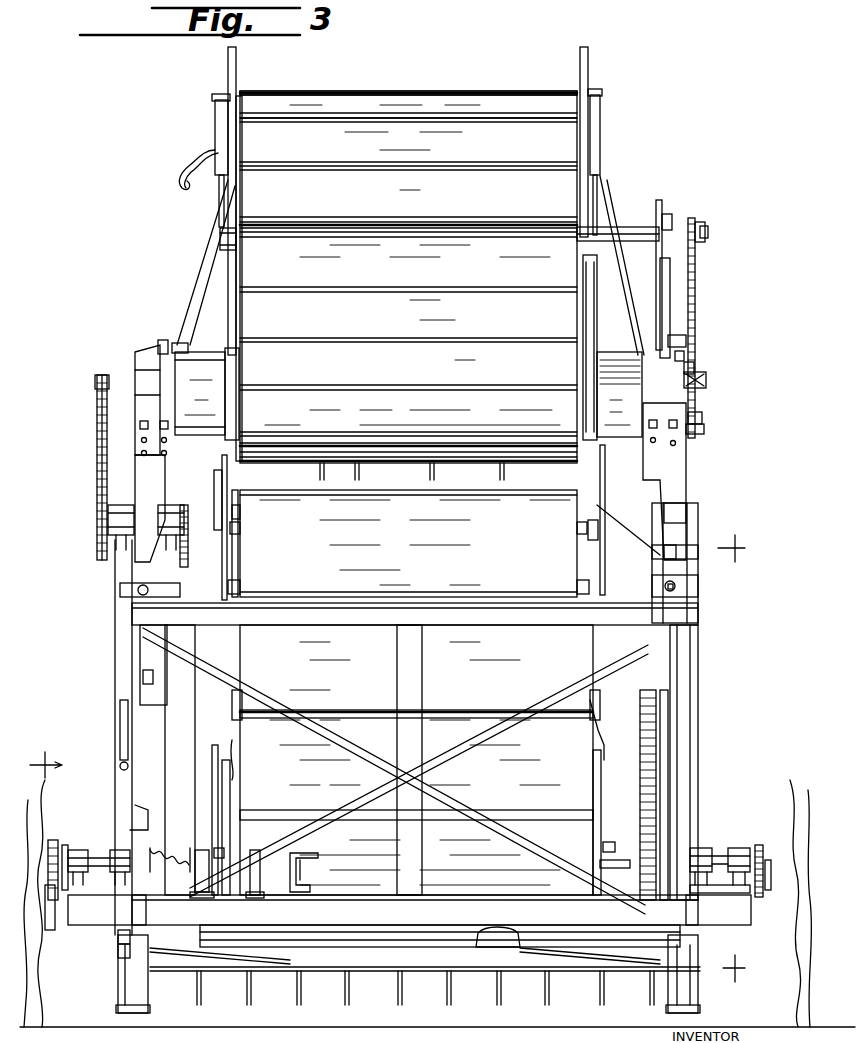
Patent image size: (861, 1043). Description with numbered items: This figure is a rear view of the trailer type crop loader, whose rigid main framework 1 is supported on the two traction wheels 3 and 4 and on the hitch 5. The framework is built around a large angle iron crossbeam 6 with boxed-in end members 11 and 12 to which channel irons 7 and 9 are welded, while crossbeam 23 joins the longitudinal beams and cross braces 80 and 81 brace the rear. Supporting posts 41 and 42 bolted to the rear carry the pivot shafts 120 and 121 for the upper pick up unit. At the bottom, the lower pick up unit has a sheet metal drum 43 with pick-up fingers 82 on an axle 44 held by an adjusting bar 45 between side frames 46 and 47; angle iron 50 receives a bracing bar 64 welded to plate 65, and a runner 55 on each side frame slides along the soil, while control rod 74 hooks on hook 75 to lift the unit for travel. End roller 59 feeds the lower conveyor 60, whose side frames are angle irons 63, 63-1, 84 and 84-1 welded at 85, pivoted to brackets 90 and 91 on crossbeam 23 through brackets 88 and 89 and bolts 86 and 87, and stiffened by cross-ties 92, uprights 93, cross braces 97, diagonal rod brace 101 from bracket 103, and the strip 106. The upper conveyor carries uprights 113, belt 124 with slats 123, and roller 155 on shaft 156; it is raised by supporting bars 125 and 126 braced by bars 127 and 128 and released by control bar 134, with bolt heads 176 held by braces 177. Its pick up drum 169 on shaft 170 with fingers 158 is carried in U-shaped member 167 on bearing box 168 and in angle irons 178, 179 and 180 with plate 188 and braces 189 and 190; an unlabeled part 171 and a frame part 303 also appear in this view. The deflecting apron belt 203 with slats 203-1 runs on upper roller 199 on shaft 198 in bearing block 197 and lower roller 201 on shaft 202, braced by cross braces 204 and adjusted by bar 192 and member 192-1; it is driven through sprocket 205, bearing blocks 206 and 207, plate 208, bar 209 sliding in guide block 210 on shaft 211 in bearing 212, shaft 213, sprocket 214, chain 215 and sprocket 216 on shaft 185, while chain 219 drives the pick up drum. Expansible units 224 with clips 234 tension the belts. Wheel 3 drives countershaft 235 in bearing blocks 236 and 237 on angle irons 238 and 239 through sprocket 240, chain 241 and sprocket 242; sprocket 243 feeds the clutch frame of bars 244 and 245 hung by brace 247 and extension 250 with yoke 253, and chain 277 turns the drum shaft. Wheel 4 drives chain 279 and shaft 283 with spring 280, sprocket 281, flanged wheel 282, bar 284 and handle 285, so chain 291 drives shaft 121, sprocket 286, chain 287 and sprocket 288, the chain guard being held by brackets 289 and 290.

The main framework 1 is at (104, 775).
The wheel 3 is at (780, 1020).
The wheel 4 is at (50, 994).
The hitch 5 is at (742, 758).
The angle iron crossbeam 6 is at (458, 906).
The channel iron 7 is at (682, 726).
The channel iron 9 is at (130, 813).
The end member 11 is at (704, 946).
The end member 12 is at (80, 932).
The crossbeam 23 is at (496, 626).
The supporting post 41 is at (698, 647).
The supporting post 42 is at (146, 654).
The hollow sheet metal drum 43 is at (175, 976).
The axle 44 is at (118, 953).
The adjusting bar 45 is at (118, 938).
The crop pick up side frame 46 is at (715, 996).
The crop pick up side frame 47 is at (111, 997).
The angle iron 50 is at (118, 967).
The runner 55 is at (150, 1012).
The end roller 59 is at (496, 948).
The lower conveyor 60 is at (402, 506).
The angle iron 63 is at (587, 548).
The angle iron 63-1 is at (565, 529).
The bracing bar 64 is at (220, 968).
The plate 65 is at (232, 939).
The control rod 74 is at (122, 736).
The hook 75 is at (124, 1006).
The cross brace 80 is at (270, 697).
The cross brace 81 is at (570, 690).
The pick-up fingers 82 is at (450, 1004).
The angle iron 84 is at (238, 546).
The angle iron 84-1 is at (248, 521).
The weld joint 85 is at (246, 531).
The bolt 86 is at (586, 589).
The bolt 87 is at (242, 590).
The bracket 88 is at (598, 576).
The bracket 89 is at (245, 579).
The bracket 90 is at (598, 589).
The bracket 91 is at (234, 590).
The cross-tie 92 is at (597, 826).
The upright 93 is at (600, 770).
The cross brace 97 is at (436, 702).
The diagonal rod brace 101 is at (597, 842).
The bracket 103 is at (598, 869).
The thin metal strip 106 is at (396, 686).
The upright 113 is at (590, 74).
The pivot shaft 120 is at (686, 517).
The pivot shaft 121 is at (100, 523).
The slats 123 is at (526, 120).
The upper conveyor belt 124 is at (408, 104).
The supporting bar 125 is at (612, 222).
The supporting bar 126 is at (188, 300).
The bracing bar 127 is at (614, 522).
The bracing bar 128 is at (213, 496).
The control bar 134 is at (188, 163).
The roller 155 is at (238, 96).
The shaft 156 is at (600, 96).
The pick up fingers 158 is at (276, 478).
The U-shaped frame member 167 is at (690, 486).
The bearing box 168 is at (135, 556).
The pick up drum 169 is at (210, 450).
The shaft 170 is at (598, 449).
The shaft 171 is at (702, 392).
The head 176 is at (680, 584).
The brace 177 is at (680, 590).
The angle iron 178 is at (135, 354).
The angle iron 179 is at (152, 345).
The angle iron 180 is at (160, 410).
The shaft 185 is at (706, 379).
The plate 188 is at (222, 348).
The angle iron brace 189 is at (180, 345).
The angle iron brace 190 is at (180, 366).
The adjustable supporting bar 192 is at (202, 318).
The extension member 192-1 is at (218, 274).
The bearing block 197 is at (220, 241).
The upper roller shaft 198 is at (708, 232).
The upper roller 199 is at (578, 230).
The lower roller 201 is at (572, 480).
The shaft 202 is at (222, 464).
The deflecting apron belt 203 is at (408, 277).
The slats 203-1 is at (345, 294).
The cross braces 204 is at (244, 280).
The sprocket 205 is at (705, 224).
The bearing block 206 is at (598, 252).
The bearing block 207 is at (672, 222).
The plate 208 is at (664, 204).
The long bar 209 is at (670, 318).
The guide block 210 is at (686, 340).
The shaft 211 is at (625, 325).
The bearing member 212 is at (664, 317).
The shaft 213 is at (702, 416).
The sprocket 214 is at (704, 430).
The sprocket chain 215 is at (698, 262).
The sprocket 216 is at (694, 368).
The sprocket chain 219 is at (684, 357).
The expansible unit 224 is at (250, 564).
The clips 234 is at (245, 673).
The countershaft 235 is at (720, 848).
The bearing block 236 is at (750, 840).
The bearing block 237 is at (694, 846).
The angle iron 238 is at (736, 886).
The angle iron 239 is at (740, 870).
The sprocket 240 is at (750, 852).
The roller chain 241 is at (770, 942).
The large sprocket 242 is at (772, 966).
The sprocket 243 is at (648, 896).
The bar member 244 is at (668, 783).
The bar member 245 is at (658, 762).
The bracing member 247 is at (628, 687).
The brace extension 250 is at (655, 801).
The yoke member 253 is at (652, 850).
The roller chain 277 is at (160, 876).
The roller chain 279 is at (57, 856).
The spring 280 is at (150, 852).
The sprocket 281 is at (165, 901).
The flanged wheel 282 is at (216, 887).
The shaft 283 is at (118, 863).
The bar 284 is at (248, 856).
The handle 285 is at (318, 850).
The sprocket 286 is at (98, 541).
The roller chain 287 is at (97, 466).
The sprocket 288 is at (96, 396).
The bracket 289 is at (240, 639).
The bracket 290 is at (138, 806).
The chain 291 is at (196, 536).
The post 303 is at (190, 744).